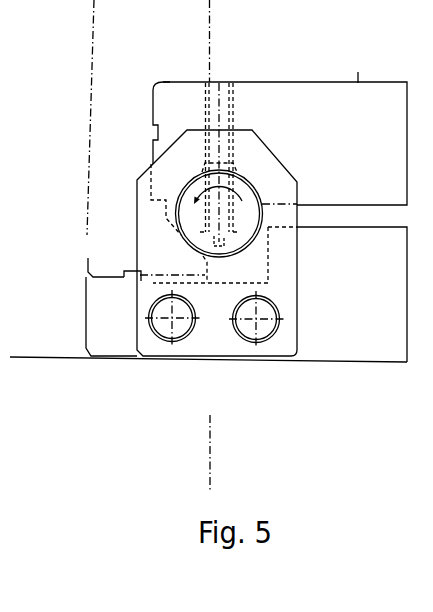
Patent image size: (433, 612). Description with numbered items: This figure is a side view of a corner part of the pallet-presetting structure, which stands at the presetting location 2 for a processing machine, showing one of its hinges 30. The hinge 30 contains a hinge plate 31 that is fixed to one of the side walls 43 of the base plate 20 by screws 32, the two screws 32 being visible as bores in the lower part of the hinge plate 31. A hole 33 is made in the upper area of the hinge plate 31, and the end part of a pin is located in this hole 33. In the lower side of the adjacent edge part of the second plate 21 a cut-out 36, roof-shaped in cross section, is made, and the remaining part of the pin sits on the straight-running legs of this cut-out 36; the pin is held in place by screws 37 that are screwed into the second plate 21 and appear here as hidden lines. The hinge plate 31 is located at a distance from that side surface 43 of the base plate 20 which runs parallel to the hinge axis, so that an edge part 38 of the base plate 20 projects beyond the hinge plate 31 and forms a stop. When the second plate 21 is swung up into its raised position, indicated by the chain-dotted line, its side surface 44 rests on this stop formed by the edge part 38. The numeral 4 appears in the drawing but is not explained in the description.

The presetting location 2 is at (213, 245).
The upper holder block 4 is at (365, 140).
The base plate 20 is at (330, 322).
The second plate 21 is at (90, 100).
The hinge 30 is at (200, 342).
The hinge plate 31 is at (267, 176).
The screws 32 is at (163, 327).
The hole 33 is at (432, 366).
The cut-out 36 is at (240, 170).
The screws 37 is at (220, 100).
The edge part 38 is at (112, 325).
The side wall 43 is at (83, 313).
The side surface 44 is at (153, 108).